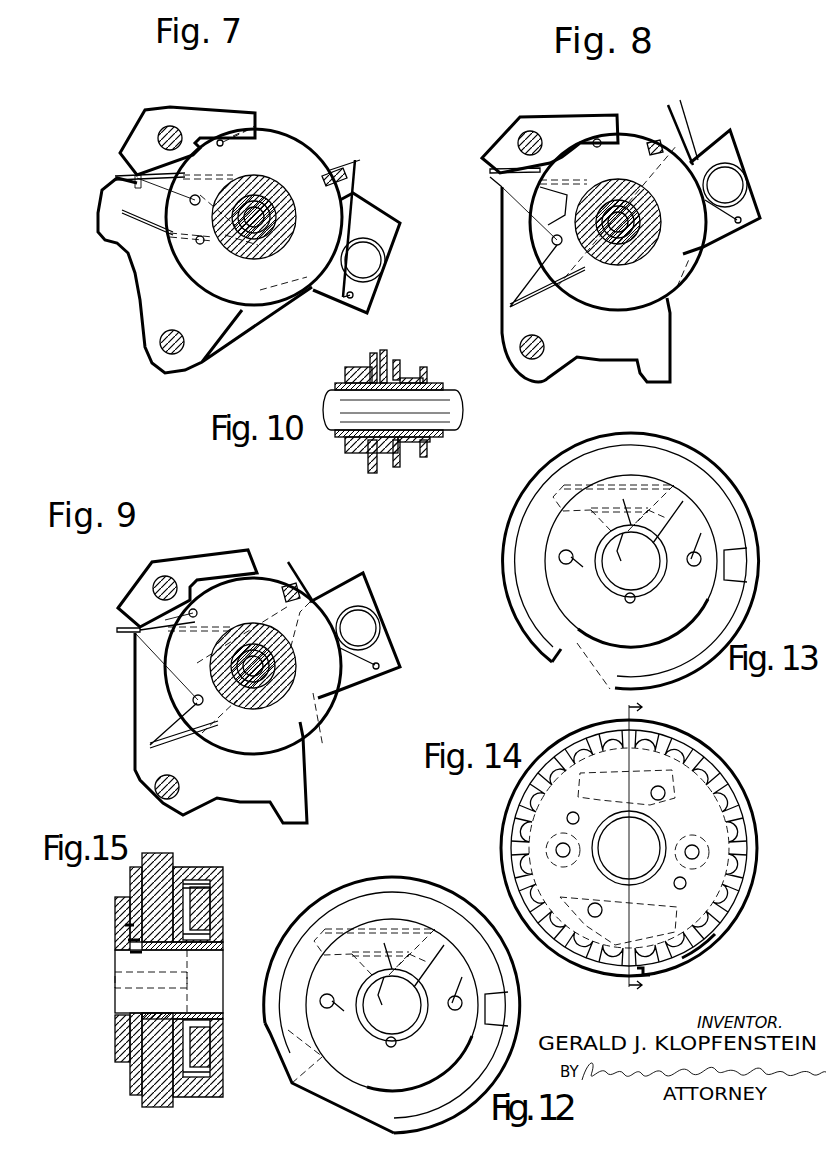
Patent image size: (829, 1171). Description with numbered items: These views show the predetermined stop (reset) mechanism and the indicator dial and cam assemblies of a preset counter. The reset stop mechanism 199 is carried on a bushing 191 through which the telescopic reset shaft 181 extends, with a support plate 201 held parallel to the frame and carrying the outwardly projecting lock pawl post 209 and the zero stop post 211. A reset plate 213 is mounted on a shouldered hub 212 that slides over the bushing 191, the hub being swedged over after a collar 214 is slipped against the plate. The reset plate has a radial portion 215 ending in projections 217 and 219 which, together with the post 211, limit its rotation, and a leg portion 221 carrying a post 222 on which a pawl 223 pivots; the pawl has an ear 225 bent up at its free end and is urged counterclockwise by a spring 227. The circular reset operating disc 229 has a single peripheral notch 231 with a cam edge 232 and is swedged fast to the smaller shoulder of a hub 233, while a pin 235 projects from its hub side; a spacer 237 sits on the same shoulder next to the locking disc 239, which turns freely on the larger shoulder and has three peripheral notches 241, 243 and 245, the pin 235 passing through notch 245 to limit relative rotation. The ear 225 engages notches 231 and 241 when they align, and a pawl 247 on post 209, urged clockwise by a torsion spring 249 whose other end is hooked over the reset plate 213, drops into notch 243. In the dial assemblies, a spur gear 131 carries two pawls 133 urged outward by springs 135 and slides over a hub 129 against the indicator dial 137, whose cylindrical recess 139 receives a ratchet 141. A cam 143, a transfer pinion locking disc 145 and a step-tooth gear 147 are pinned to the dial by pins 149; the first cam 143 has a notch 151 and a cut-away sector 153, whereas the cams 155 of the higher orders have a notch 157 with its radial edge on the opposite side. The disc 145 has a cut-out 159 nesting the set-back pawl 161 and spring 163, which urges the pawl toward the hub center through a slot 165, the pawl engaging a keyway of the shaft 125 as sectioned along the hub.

In FIG. 12, the drum shaft 125 is at (385, 870).
In FIG. 15, the drum shaft 125 is at (215, 988).
In FIG. 13, the hub 129 is at (655, 575).
In FIG. 12, the hub 129 is at (422, 1020).
In FIG. 14, the hub 129 is at (648, 875).
In FIG. 15, the hub 129 is at (223, 950).
In FIG. 14, the spur gear 131 is at (748, 878).
In FIG. 15, the spur gear 131 is at (223, 875).
In FIG. 14, the pawls 133 is at (605, 730).
In FIG. 15, the pawls 133 is at (212, 905).
In FIG. 14, the springs 135 is at (660, 812).
In FIG. 15, the springs 135 is at (212, 932).
In FIG. 14, the indicator dial 137 is at (750, 828).
In FIG. 15, the indicator dial 137 is at (200, 1098).
In FIG. 14, the cylindrical recess 139 is at (735, 795).
In FIG. 15, the cylindrical recess 139 is at (195, 872).
In FIG. 14, the ratchet 141 is at (720, 772).
In FIG. 15, the ratchet 141 is at (212, 888).
In FIG. 12, the cam 143 is at (425, 895).
In FIG. 13, the transfer pinion locking disc 145 is at (725, 510).
In FIG. 12, the transfer pinion locking disc 145 is at (450, 910).
In FIG. 15, the transfer pinion locking disc 145 is at (130, 1092).
In FIG. 13, the step-tooth gear 147 is at (740, 540).
In FIG. 12, the step-tooth gear 147 is at (505, 985).
In FIG. 14, the step-tooth gear 147 is at (518, 975).
In FIG. 15, the step-tooth gear 147 is at (115, 1043).
In FIG. 13, the pins 149 is at (693, 552).
In FIG. 12, the pins 149 is at (456, 998).
In FIG. 15, the pins 149 is at (115, 975).
In FIG. 12, the notch 151 is at (298, 1080).
In FIG. 12, the cut-away sector 153 is at (330, 1105).
In FIG. 13, the cam 155 is at (758, 583).
In FIG. 14, the cam 155 is at (745, 898).
In FIG. 15, the cam 155 is at (160, 853).
In FIG. 13, the notch 157 is at (612, 680).
In FIG. 14, the notch 157 is at (715, 965).
In FIG. 13, the cut-out portion 159 is at (565, 488).
In FIG. 12, the cut-out portion 159 is at (325, 935).
In FIG. 15, the cut-out portion 159 is at (118, 908).
In FIG. 13, the set-back pawl 161 is at (686, 485).
In FIG. 12, the set-back pawl 161 is at (460, 950).
In FIG. 14, the set-back pawl 161 is at (620, 825).
In FIG. 15, the set-back pawl 161 is at (142, 975).
In FIG. 13, the spring 163 is at (560, 495).
In FIG. 12, the spring 163 is at (320, 950).
In FIG. 15, the spring 163 is at (125, 926).
In FIG. 13, the slot 165 is at (622, 553).
In FIG. 12, the slot 165 is at (390, 1012).
In FIG. 15, the slot 165 is at (128, 943).
In FIG. 7, the telescopic shaft 181 is at (268, 192).
In FIG. 10, the telescopic shaft 181 is at (455, 395).
In FIG. 8, the telescopic shaft 181 is at (635, 248).
In FIG. 9, the telescopic shaft 181 is at (280, 645).
In FIG. 7, the bushing 191 is at (275, 218).
In FIG. 10, the bushing 191 is at (435, 382).
In FIG. 8, the bushing 191 is at (640, 210).
In FIG. 9, the bushing 191 is at (275, 662).
In FIG. 7, the reset stop mechanism 199 is at (275, 133).
In FIG. 8, the reset stop mechanism 199 is at (630, 133).
In FIG. 9, the reset stop mechanism 199 is at (265, 575).
In FIG. 7, the support plate 201 is at (280, 317).
In FIG. 10, the support plate 201 is at (428, 457).
In FIG. 8, the support plate 201 is at (502, 240).
In FIG. 9, the support plate 201 is at (135, 672).
In FIG. 7, the lock pawl post 209 is at (168, 125).
In FIG. 8, the lock pawl post 209 is at (533, 130).
In FIG. 9, the lock pawl post 209 is at (170, 578).
In FIG. 7, the zero stop post 211 is at (160, 342).
In FIG. 8, the zero stop post 211 is at (543, 375).
In FIG. 9, the zero stop post 211 is at (155, 790).
In FIG. 10, the shouldered hub 212 is at (424, 367).
In FIG. 7, the reset plate 213 is at (100, 213).
In FIG. 10, the reset plate 213 is at (397, 467).
In FIG. 8, the reset plate 213 is at (670, 345).
In FIG. 9, the reset plate 213 is at (303, 773).
In FIG. 10, the collar 214 is at (398, 360).
In FIG. 7, the radial portion 215 is at (140, 280).
In FIG. 8, the radial portion 215 is at (605, 365).
In FIG. 9, the radial portion 215 is at (238, 803).
In FIG. 7, the projection 217 is at (207, 363).
In FIG. 8, the projection 217 is at (668, 382).
In FIG. 9, the projection 217 is at (307, 820).
In FIG. 7, the projection 219 is at (102, 243).
In FIG. 8, the projection 219 is at (502, 333).
In FIG. 9, the projection 219 is at (135, 770).
In FIG. 7, the leg portion 221 is at (400, 228).
In FIG. 8, the leg portion 221 is at (762, 222).
In FIG. 9, the leg portion 221 is at (388, 660).
In FIG. 7, the post 222 is at (385, 260).
In FIG. 8, the post 222 is at (747, 182).
In FIG. 9, the post 222 is at (382, 626).
In FIG. 7, the pawl 223 is at (372, 203).
In FIG. 8, the pawl 223 is at (695, 142).
In FIG. 9, the pawl 223 is at (315, 590).
In FIG. 7, the ear 225 is at (335, 177).
In FIG. 8, the ear 225 is at (652, 115).
In FIG. 9, the ear 225 is at (285, 560).
In FIG. 7, the spring 227 is at (360, 160).
In FIG. 8, the spring 227 is at (682, 108).
In FIG. 9, the spring 227 is at (300, 575).
In FIG. 7, the reset operating disc 229 is at (170, 235).
In FIG. 10, the reset operating disc 229 is at (383, 350).
In FIG. 8, the reset operating disc 229 is at (542, 192).
In FIG. 9, the reset operating disc 229 is at (205, 742).
In FIG. 7, the peripheral notch 231 is at (320, 178).
In FIG. 8, the peripheral notch 231 is at (648, 152).
In FIG. 9, the peripheral notch 231 is at (288, 591).
In FIG. 8, the cam edge 232 is at (680, 168).
In FIG. 10, the hub 233 is at (355, 453).
In FIG. 7, the pin 235 is at (190, 199).
In FIG. 8, the pin 235 is at (553, 246).
In FIG. 9, the pin 235 is at (192, 702).
In FIG. 10, the spacer 237 is at (373, 474).
In FIG. 7, the locking disc 239 is at (228, 282).
In FIG. 10, the locking disc 239 is at (370, 358).
In FIG. 8, the locking disc 239 is at (608, 307).
In FIG. 9, the locking disc 239 is at (338, 700).
In FIG. 7, the notch 241 is at (340, 200).
In FIG. 8, the notch 241 is at (655, 222).
In FIG. 7, the notch 243 is at (228, 148).
In FIG. 8, the notch 243 is at (597, 147).
In FIG. 9, the notch 243 is at (197, 613).
In FIG. 7, the notch 245 is at (200, 245).
In FIG. 8, the notch 245 is at (548, 214).
In FIG. 9, the notch 245 is at (230, 727).
In FIG. 7, the pawl 247 is at (200, 112).
In FIG. 8, the pawl 247 is at (512, 122).
In FIG. 9, the pawl 247 is at (165, 575).
In FIG. 7, the torsion spring 249 is at (115, 178).
In FIG. 8, the torsion spring 249 is at (490, 172).
In FIG. 9, the torsion spring 249 is at (117, 632).